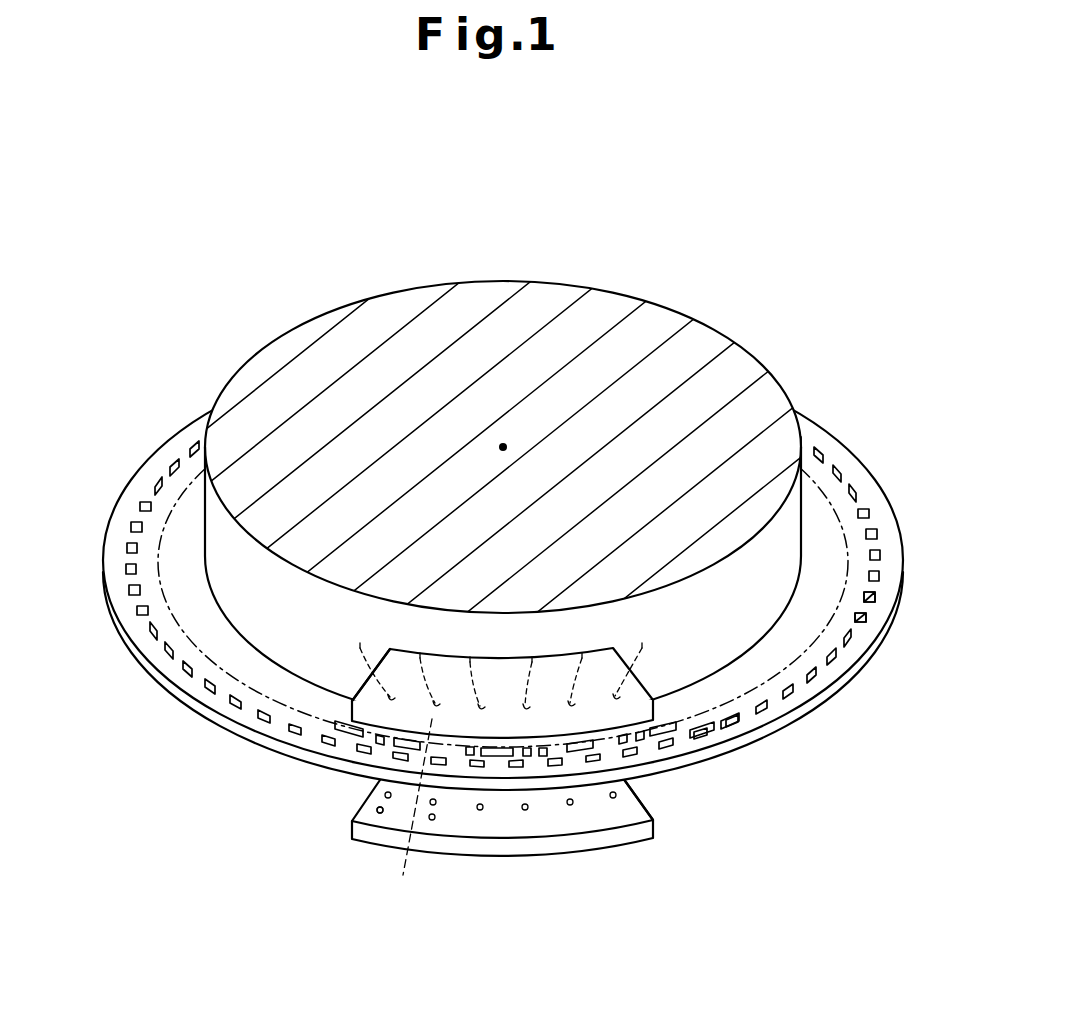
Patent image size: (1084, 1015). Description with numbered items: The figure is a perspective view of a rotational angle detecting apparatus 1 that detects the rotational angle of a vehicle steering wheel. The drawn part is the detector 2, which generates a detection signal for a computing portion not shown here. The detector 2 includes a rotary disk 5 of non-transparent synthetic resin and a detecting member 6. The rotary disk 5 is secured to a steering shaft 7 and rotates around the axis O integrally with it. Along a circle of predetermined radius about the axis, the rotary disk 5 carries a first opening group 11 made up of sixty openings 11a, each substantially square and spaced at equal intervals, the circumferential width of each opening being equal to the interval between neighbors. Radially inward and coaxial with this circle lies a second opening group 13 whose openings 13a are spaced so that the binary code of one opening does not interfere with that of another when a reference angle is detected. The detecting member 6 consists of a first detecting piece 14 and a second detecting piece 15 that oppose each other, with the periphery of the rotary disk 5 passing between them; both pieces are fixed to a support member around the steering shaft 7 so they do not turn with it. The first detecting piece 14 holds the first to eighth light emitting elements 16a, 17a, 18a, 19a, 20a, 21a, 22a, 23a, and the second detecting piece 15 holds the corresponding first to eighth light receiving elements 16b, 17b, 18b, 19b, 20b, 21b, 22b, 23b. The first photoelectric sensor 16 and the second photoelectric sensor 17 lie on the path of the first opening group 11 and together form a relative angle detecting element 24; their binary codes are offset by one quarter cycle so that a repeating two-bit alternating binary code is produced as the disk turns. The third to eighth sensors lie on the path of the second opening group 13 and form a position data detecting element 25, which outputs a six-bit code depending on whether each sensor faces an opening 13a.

The rotational angle detecting apparatus 1 is at (806, 378).
The detector 2 is at (724, 768).
The rotary disk 5 is at (833, 441).
The detecting member 6 is at (656, 830).
The steering shaft 7 is at (553, 297).
The first opening group 11 is at (878, 545).
The opening 11a is at (869, 598).
The second opening group 13 is at (659, 725).
The opening 13a is at (355, 738).
The first detecting piece 14 is at (390, 649).
The second detecting piece 15 is at (638, 788).
The first photoelectric sensor 16 is at (302, 641).
The first light emitting element 16a is at (341, 674).
The first light receiving element 16b is at (374, 805).
The second photoelectric sensor 17 is at (383, 910).
The second light emitting element 17a is at (408, 814).
The second light receiving element 17b is at (434, 821).
The third light emitting element 18a is at (360, 656).
The third light receiving element 18b is at (392, 799).
The fourth light emitting element 19a is at (415, 660).
The fourth light receiving element 19b is at (436, 805).
The fifth light emitting element 20a is at (470, 663).
The fifth light receiving element 20b is at (483, 810).
The sixth light emitting element 21a is at (528, 664).
The sixth light receiving element 21b is at (528, 810).
The seventh light emitting element 22a is at (583, 659).
The seventh light receiving element 22b is at (572, 805).
The eighth light emitting element 23a is at (639, 656).
The eighth light receiving element 23b is at (614, 798).
The relative angle detecting element 24 is at (376, 816).
The position data detecting element 25 is at (685, 620).